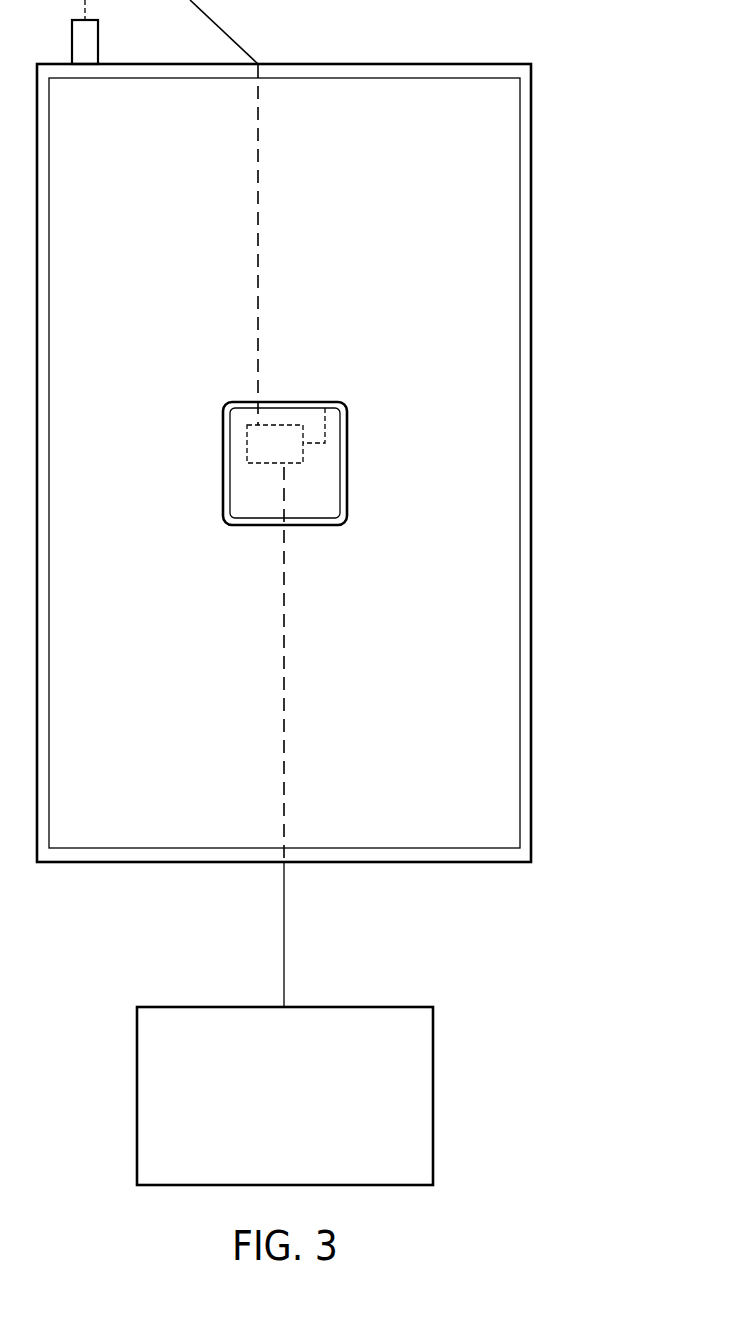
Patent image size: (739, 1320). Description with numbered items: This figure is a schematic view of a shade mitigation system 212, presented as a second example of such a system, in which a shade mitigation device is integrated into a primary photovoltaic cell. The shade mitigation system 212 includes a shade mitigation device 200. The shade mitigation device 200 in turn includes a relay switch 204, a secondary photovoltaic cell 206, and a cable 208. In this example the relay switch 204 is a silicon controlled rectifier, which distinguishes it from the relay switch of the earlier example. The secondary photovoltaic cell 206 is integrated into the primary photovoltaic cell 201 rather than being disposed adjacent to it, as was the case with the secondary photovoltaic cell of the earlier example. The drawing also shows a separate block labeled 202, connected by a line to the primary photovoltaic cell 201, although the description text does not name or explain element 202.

The shade mitigation device 200 is at (352, 451).
The primary photovoltaic cell 201 is at (531, 78).
The controller 202 is at (430, 1023).
The relay switch 204 is at (257, 464).
The secondary photovoltaic cell 206 is at (333, 507).
The cable 208 is at (313, 444).
The shade mitigation system 212 is at (350, 378).